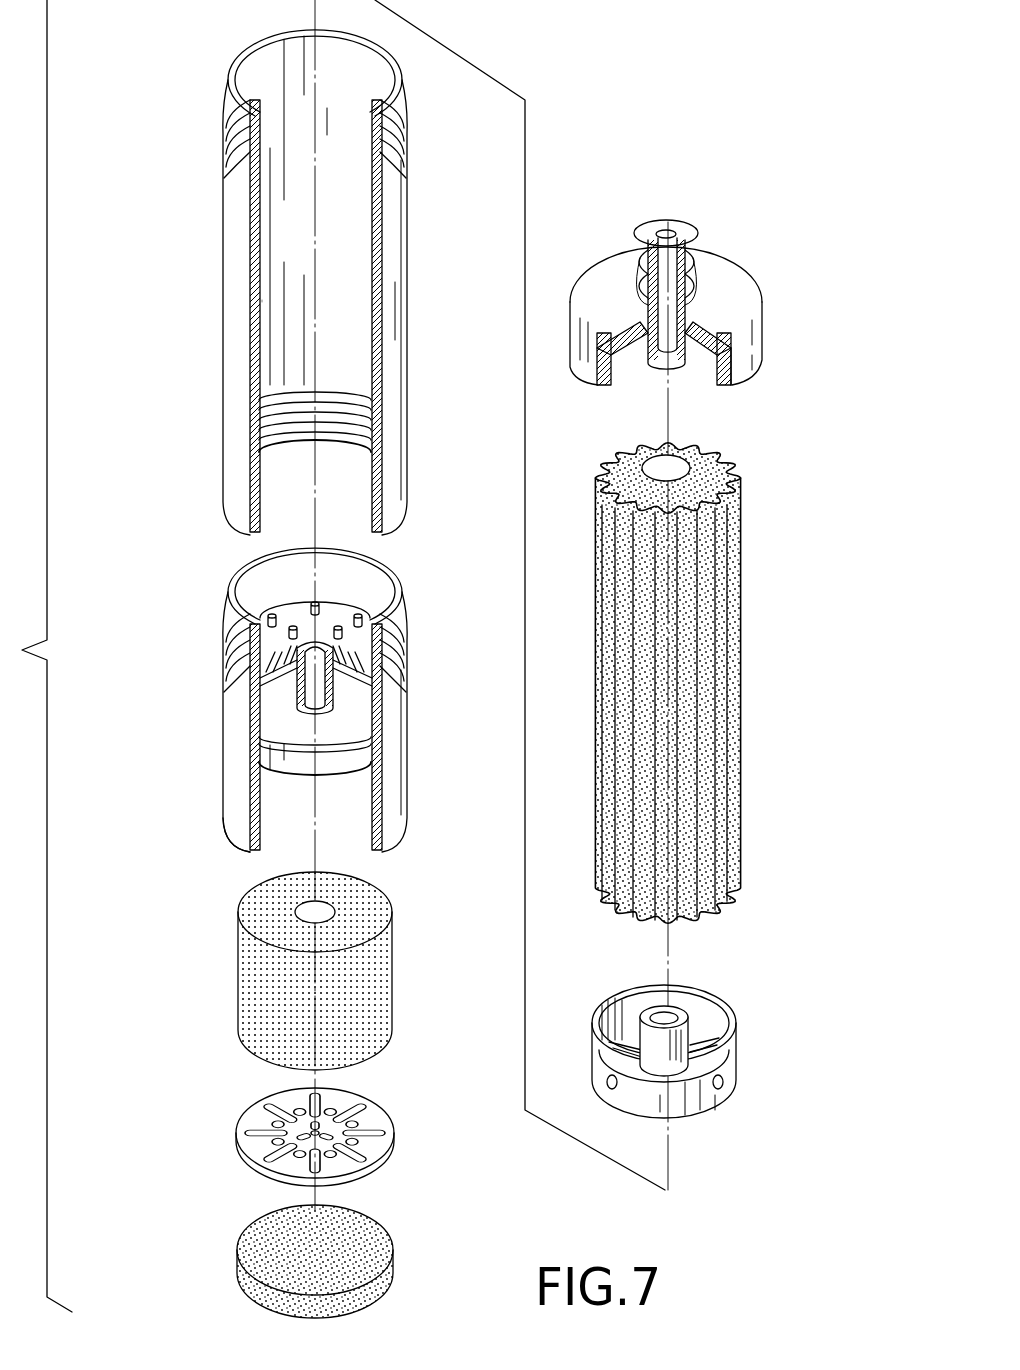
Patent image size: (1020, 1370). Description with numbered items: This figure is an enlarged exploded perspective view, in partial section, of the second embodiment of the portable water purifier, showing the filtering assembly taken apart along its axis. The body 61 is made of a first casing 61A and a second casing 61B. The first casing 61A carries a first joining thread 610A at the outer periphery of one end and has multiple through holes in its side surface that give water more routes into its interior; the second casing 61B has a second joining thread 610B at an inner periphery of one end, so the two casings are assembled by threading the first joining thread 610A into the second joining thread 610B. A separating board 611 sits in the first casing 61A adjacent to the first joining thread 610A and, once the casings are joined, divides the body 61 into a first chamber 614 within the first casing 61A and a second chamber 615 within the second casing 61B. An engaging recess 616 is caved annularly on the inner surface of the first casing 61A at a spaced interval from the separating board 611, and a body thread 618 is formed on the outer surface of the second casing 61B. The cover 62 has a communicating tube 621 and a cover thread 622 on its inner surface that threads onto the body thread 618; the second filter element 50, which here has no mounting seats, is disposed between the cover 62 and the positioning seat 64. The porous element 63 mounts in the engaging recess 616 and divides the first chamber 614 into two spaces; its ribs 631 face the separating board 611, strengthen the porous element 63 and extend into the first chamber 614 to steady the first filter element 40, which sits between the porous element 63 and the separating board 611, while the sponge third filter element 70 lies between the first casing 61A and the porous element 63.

The body 61 is at (148, 598).
The first casing 61A is at (211, 735).
The second casing 61B is at (208, 284).
The body thread 618 is at (242, 120).
The second chamber 615 is at (337, 251).
The second joining thread 610B is at (268, 440).
The separating board 611 is at (336, 616).
The first joining thread 610A is at (388, 630).
The first chamber 614 is at (341, 806).
The engaging recess 616 is at (262, 816).
The first filter element 40 is at (230, 990).
The porous element 63 is at (230, 1153).
The ribs 631 is at (262, 1113).
The third filter element 70 is at (231, 1278).
The cover 62 is at (767, 292).
The communicating tube 621 is at (684, 232).
The cover thread 622 is at (727, 363).
The second filter element 50 is at (742, 682).
The positioning seat 64 is at (747, 1057).